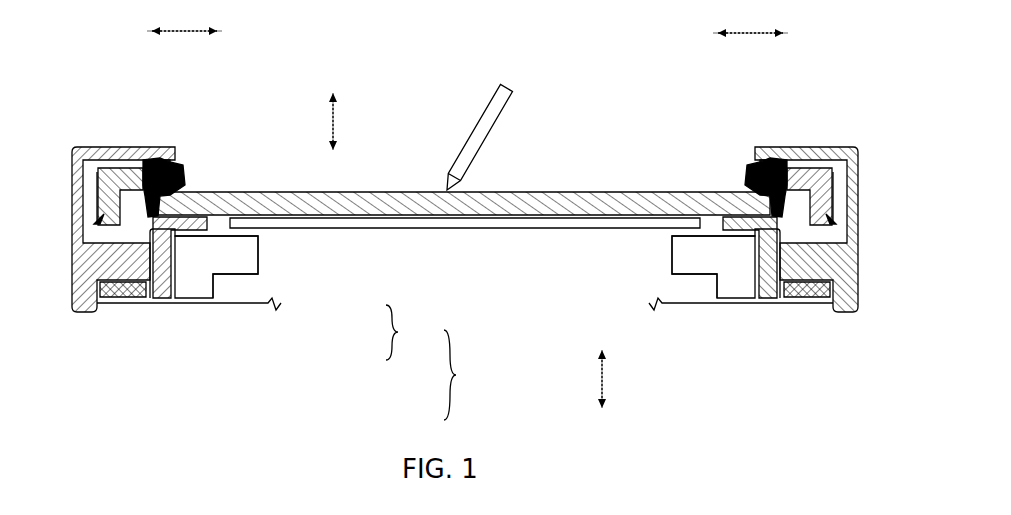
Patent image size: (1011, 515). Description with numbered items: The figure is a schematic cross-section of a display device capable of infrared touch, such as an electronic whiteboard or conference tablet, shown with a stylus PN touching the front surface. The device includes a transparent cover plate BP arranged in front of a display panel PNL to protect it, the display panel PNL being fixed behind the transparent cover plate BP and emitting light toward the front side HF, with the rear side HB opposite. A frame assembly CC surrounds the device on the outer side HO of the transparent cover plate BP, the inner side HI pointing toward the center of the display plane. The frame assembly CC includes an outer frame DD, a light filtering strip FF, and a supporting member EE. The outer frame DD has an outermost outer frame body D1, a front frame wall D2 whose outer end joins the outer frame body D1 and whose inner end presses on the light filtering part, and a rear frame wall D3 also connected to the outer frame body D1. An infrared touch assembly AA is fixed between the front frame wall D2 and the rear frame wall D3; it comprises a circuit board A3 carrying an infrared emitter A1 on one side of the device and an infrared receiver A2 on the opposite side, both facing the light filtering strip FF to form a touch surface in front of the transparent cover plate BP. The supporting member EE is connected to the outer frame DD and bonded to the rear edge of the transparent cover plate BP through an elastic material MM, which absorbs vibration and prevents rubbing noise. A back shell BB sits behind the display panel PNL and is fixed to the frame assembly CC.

The outer frame body D1 is at (73, 206).
The front frame wall D2 is at (100, 168).
The rear frame wall D3 is at (157, 300).
The outer frame DD is at (411, 332).
The frame assembly CC is at (468, 375).
The supporting member EE is at (140, 262).
The light filtering strip FF is at (183, 160).
The infrared emitter A1 is at (150, 162).
The infrared receiver A2 is at (790, 162).
The circuit board A3 is at (100, 185).
The infrared touch assembly AA is at (98, 221).
The back shell BB is at (186, 305).
The elastic material MM is at (212, 262).
The pen (stylus) PN is at (472, 132).
The display panel PNL is at (590, 215).
The transparent cover plate BP is at (540, 205).
The outer side HO is at (469, 34).
The inner side HI is at (467, 34).
The front side HF is at (470, 237).
The rear side HB is at (471, 267).